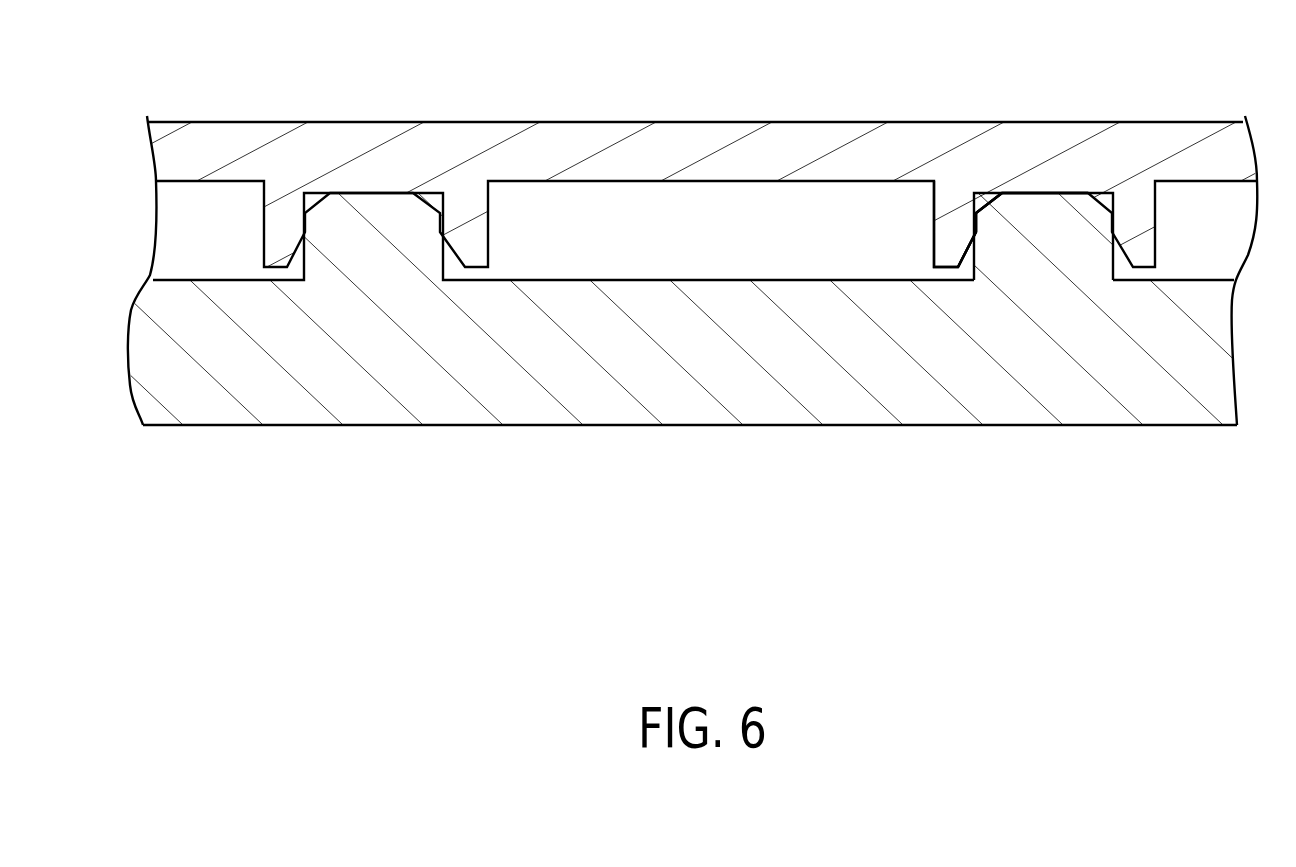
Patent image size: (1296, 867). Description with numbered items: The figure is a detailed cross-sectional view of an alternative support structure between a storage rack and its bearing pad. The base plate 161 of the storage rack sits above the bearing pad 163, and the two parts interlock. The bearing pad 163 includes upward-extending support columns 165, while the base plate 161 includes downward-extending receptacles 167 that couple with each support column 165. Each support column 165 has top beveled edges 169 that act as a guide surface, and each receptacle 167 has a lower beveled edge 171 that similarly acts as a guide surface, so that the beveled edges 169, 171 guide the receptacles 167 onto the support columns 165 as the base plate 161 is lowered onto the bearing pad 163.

The base plate 161 is at (180, 150).
The bearing pad 163 is at (173, 382).
The support column 165 is at (1083, 248).
The receptacle 167 is at (955, 238).
The top beveled edge 169 is at (1002, 194).
The lower beveled edge 171 is at (988, 202).